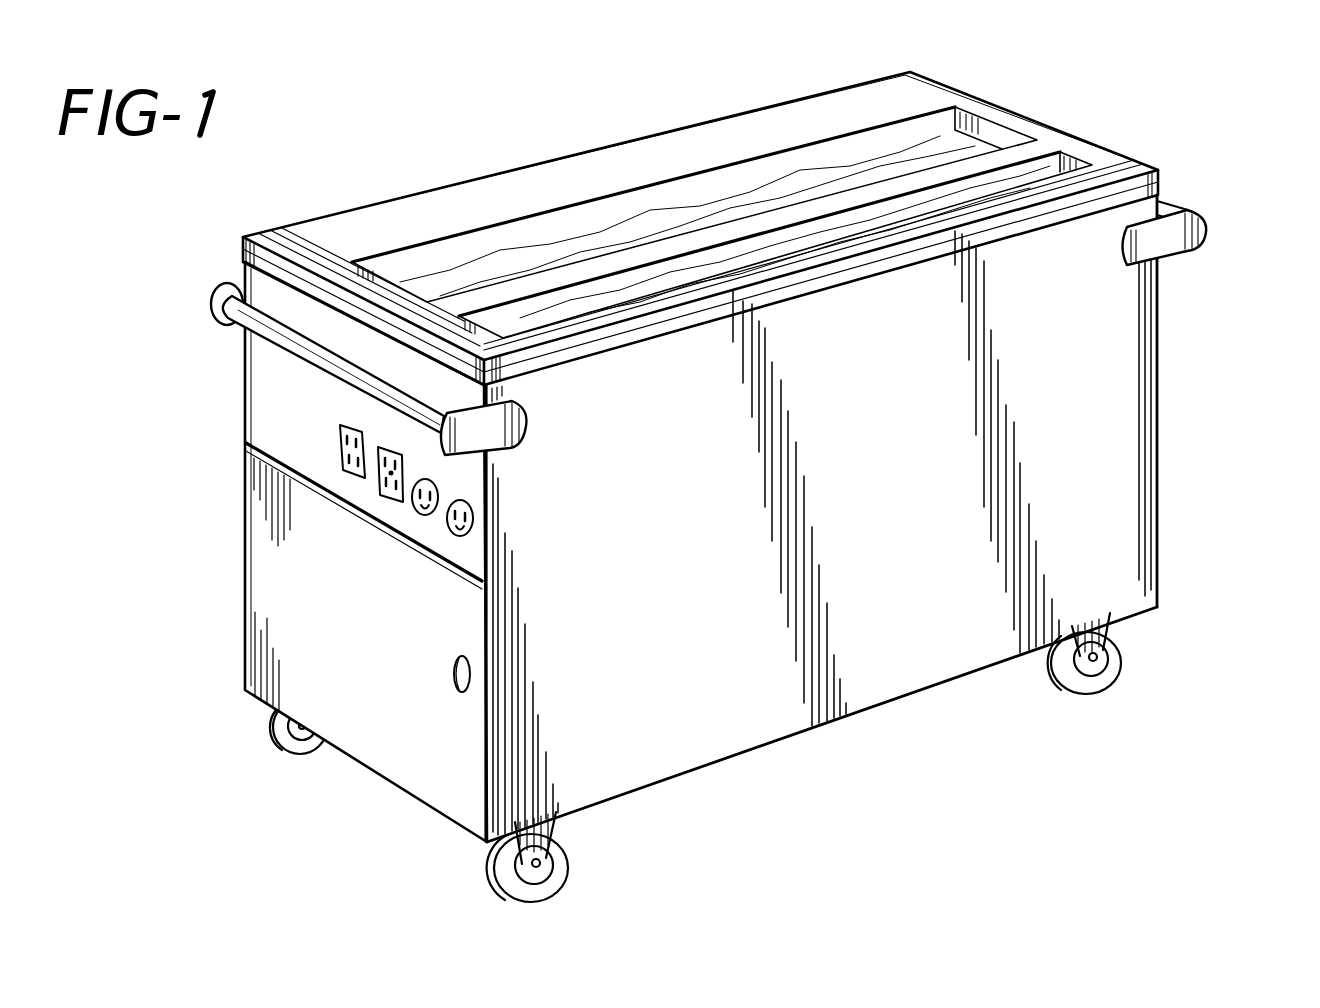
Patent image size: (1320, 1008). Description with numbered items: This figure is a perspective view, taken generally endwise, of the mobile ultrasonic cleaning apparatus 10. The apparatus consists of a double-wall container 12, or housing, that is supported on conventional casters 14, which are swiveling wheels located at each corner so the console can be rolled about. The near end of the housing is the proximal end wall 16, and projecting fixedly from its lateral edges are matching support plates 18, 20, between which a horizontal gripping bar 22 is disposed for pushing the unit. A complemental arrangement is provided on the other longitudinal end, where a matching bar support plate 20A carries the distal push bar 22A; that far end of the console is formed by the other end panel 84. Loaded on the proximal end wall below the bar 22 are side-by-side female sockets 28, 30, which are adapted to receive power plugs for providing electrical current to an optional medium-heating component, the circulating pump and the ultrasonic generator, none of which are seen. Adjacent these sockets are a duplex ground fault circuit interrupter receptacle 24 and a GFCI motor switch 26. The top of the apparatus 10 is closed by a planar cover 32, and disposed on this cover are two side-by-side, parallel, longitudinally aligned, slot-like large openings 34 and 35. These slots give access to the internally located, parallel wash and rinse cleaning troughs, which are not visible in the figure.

The mobile ultrasonic cleaning apparatus 10 is at (560, 116).
The double-wall container 12 is at (708, 518).
The casters 14 is at (284, 742).
The proximal end wall 16 is at (312, 552).
The support plate 18 is at (212, 292).
The support plate 20 is at (496, 466).
The bar support plate 20A is at (1185, 237).
The horizontal gripping bar 22 is at (262, 333).
The push bar 22A is at (1170, 207).
The duplex ground fault circuit interrupter receptacle 24 is at (343, 473).
The GFCI motor switch 26 is at (383, 498).
The female socket 28 is at (420, 520).
The female socket 30 is at (458, 540).
The planar cover 32 is at (727, 221).
The slot-like opening 34 is at (990, 126).
The slot-like opening 35 is at (1095, 157).
The other end panel 84 is at (1160, 322).